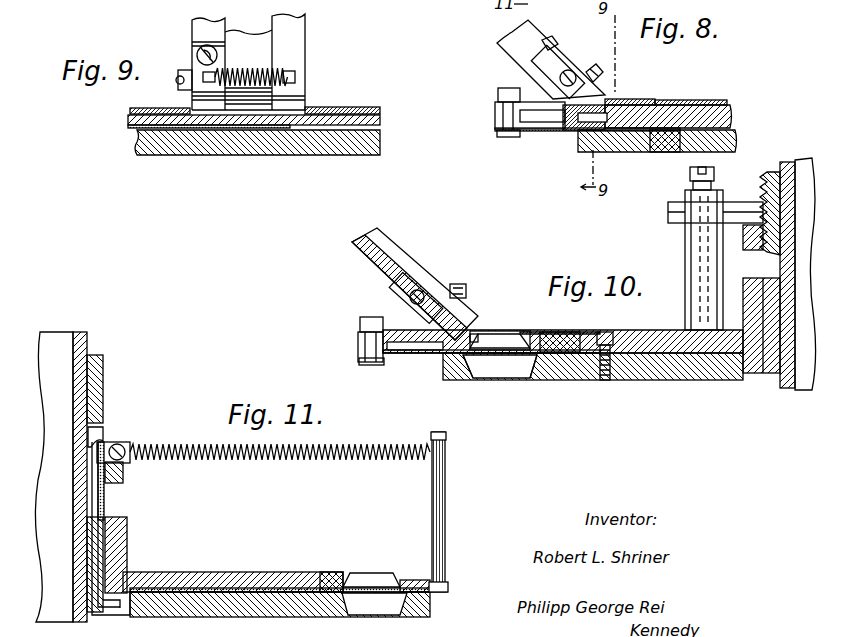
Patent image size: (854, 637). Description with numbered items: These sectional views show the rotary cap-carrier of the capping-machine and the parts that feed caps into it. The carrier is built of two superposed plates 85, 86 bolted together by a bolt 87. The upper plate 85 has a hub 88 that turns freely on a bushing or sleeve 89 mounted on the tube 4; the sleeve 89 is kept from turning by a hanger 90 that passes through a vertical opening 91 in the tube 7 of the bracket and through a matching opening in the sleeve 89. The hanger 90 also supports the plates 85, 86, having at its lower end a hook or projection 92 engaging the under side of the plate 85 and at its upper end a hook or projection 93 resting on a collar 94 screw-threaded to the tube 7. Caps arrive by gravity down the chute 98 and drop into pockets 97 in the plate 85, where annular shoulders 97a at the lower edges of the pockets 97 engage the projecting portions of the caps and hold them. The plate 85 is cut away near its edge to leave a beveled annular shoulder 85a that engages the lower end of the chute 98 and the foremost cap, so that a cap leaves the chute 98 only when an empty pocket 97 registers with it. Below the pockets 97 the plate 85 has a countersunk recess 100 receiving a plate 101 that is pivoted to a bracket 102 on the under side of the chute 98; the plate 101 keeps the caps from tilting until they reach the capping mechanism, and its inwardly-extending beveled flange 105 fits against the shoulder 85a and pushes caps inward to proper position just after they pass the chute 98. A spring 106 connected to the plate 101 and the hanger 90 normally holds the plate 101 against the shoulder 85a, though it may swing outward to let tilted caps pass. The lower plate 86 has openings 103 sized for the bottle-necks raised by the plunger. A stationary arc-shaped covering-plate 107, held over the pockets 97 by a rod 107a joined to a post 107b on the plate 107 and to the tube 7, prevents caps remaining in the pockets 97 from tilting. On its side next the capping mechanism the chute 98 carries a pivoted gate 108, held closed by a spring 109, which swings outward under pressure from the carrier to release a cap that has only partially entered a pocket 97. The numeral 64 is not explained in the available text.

In FIG. 10, the tube 4 is at (803, 165).
In FIG. 11, the tube 4 is at (80, 333).
In FIG. 10, the tube of bracket 7 is at (780, 171).
In FIG. 11, the tube of bracket 7 is at (103, 386).
In FIG. 11, the rod 64 is at (448, 586).
In FIG. 9, the upper plate 85 is at (381, 120).
In FIG. 8, the upper plate 85 is at (733, 108).
In FIG. 10, the upper plate 85 is at (645, 327).
In FIG. 11, the upper plate 85 is at (240, 573).
In FIG. 8, the annular shoulder 85a is at (637, 107).
In FIG. 10, the annular shoulder 85a is at (476, 333).
In FIG. 9, the lower plate 86 is at (300, 156).
In FIG. 8, the lower plate 86 is at (737, 133).
In FIG. 10, the lower plate 86 is at (690, 380).
In FIG. 11, the lower plate 86 is at (256, 618).
In FIG. 10, the bolt 87 is at (606, 382).
In FIG. 10, the hub 88 is at (752, 281).
In FIG. 11, the hub 88 is at (125, 526).
In FIG. 10, the bushing or sleeve 89 is at (770, 380).
In FIG. 11, the bushing or sleeve 89 is at (87, 567).
In FIG. 11, the hanger 90 is at (107, 506).
In FIG. 11, the vertical opening 91 is at (103, 430).
In FIG. 11, the hook or projection 92 is at (112, 606).
In FIG. 11, the hook or projection 93 is at (119, 443).
In FIG. 10, the collar 94 is at (745, 249).
In FIG. 11, the collar 94 is at (123, 472).
In FIG. 10, the pocket 97 is at (492, 334).
In FIG. 11, the pocket 97 is at (372, 570).
In FIG. 10, the annular shoulder 97a is at (465, 365).
In FIG. 11, the annular shoulder 97a is at (397, 578).
In FIG. 9, the chute 98 is at (240, 62).
In FIG. 8, the chute 98 is at (497, 47).
In FIG. 10, the chute 98 is at (362, 270).
In FIG. 8, the annular countersunk portion or recess 100 is at (678, 152).
In FIG. 10, the annular countersunk portion or recess 100 is at (570, 327).
In FIG. 11, the annular countersunk portion or recess 100 is at (337, 573).
In FIG. 9, the plate 101 is at (128, 127).
In FIG. 8, the plate 101 is at (553, 131).
In FIG. 10, the plate 101 is at (422, 355).
In FIG. 11, the plate 101 is at (440, 594).
In FIG. 8, the bracket 102 is at (495, 106).
In FIG. 10, the bracket 102 is at (358, 337).
In FIG. 10, the opening 103 is at (500, 366).
In FIG. 11, the opening 103 is at (374, 604).
In FIG. 9, the guide or flange 105 is at (166, 110).
In FIG. 8, the guide or flange 105 is at (612, 99).
In FIG. 11, the spring 106 is at (378, 446).
In FIG. 9, the covering-plate 107 is at (356, 108).
In FIG. 8, the covering-plate 107 is at (720, 100).
In FIG. 10, the covering-plate 107 is at (535, 327).
In FIG. 10, the rod 107a is at (763, 190).
In FIG. 10, the post 107b is at (686, 245).
In FIG. 9, the gate 108 is at (196, 48).
In FIG. 8, the gate 108 is at (563, 53).
In FIG. 10, the gate 108 is at (415, 298).
In FIG. 9, the spring 109 is at (268, 74).
In FIG. 8, the spring 109 is at (596, 63).
In FIG. 10, the spring 109 is at (457, 285).